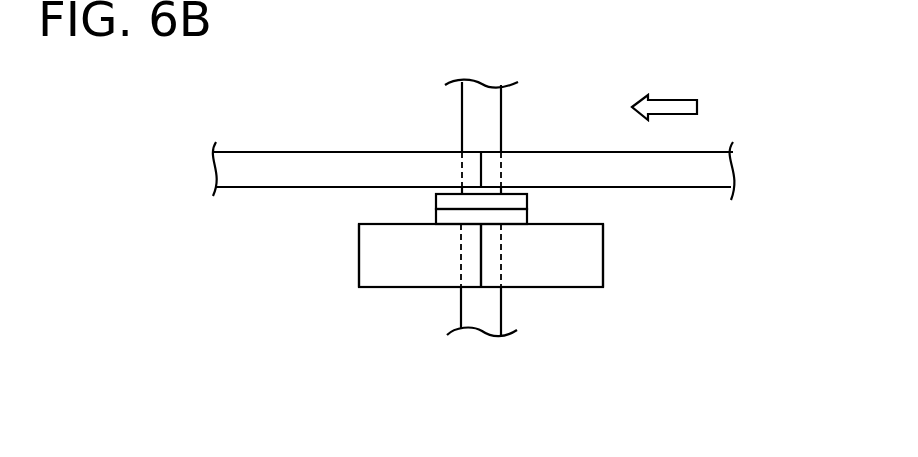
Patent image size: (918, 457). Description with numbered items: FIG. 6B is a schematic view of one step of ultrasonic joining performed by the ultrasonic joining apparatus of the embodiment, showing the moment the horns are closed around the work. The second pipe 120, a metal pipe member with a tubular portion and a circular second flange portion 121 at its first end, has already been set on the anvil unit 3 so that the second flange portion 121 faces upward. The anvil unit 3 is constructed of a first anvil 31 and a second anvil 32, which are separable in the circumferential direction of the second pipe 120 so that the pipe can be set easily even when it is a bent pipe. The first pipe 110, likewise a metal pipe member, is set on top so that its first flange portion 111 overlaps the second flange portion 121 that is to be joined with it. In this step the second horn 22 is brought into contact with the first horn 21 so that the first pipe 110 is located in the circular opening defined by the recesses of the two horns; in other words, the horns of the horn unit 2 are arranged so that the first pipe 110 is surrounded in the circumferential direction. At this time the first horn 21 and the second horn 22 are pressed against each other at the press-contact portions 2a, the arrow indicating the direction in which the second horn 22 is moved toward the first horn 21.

The horn unit 2 is at (285, 188).
The first horn 21 is at (337, 163).
The second horn 22 is at (683, 165).
The press-contact portion 2a is at (480, 171).
The anvil unit 3 is at (605, 260).
The first anvil 31 is at (405, 265).
The second anvil 32 is at (567, 277).
The first pipe 110 is at (483, 115).
The first flange portion 111 is at (447, 202).
The second pipe 120 is at (492, 310).
The second flange portion 121 is at (518, 216).